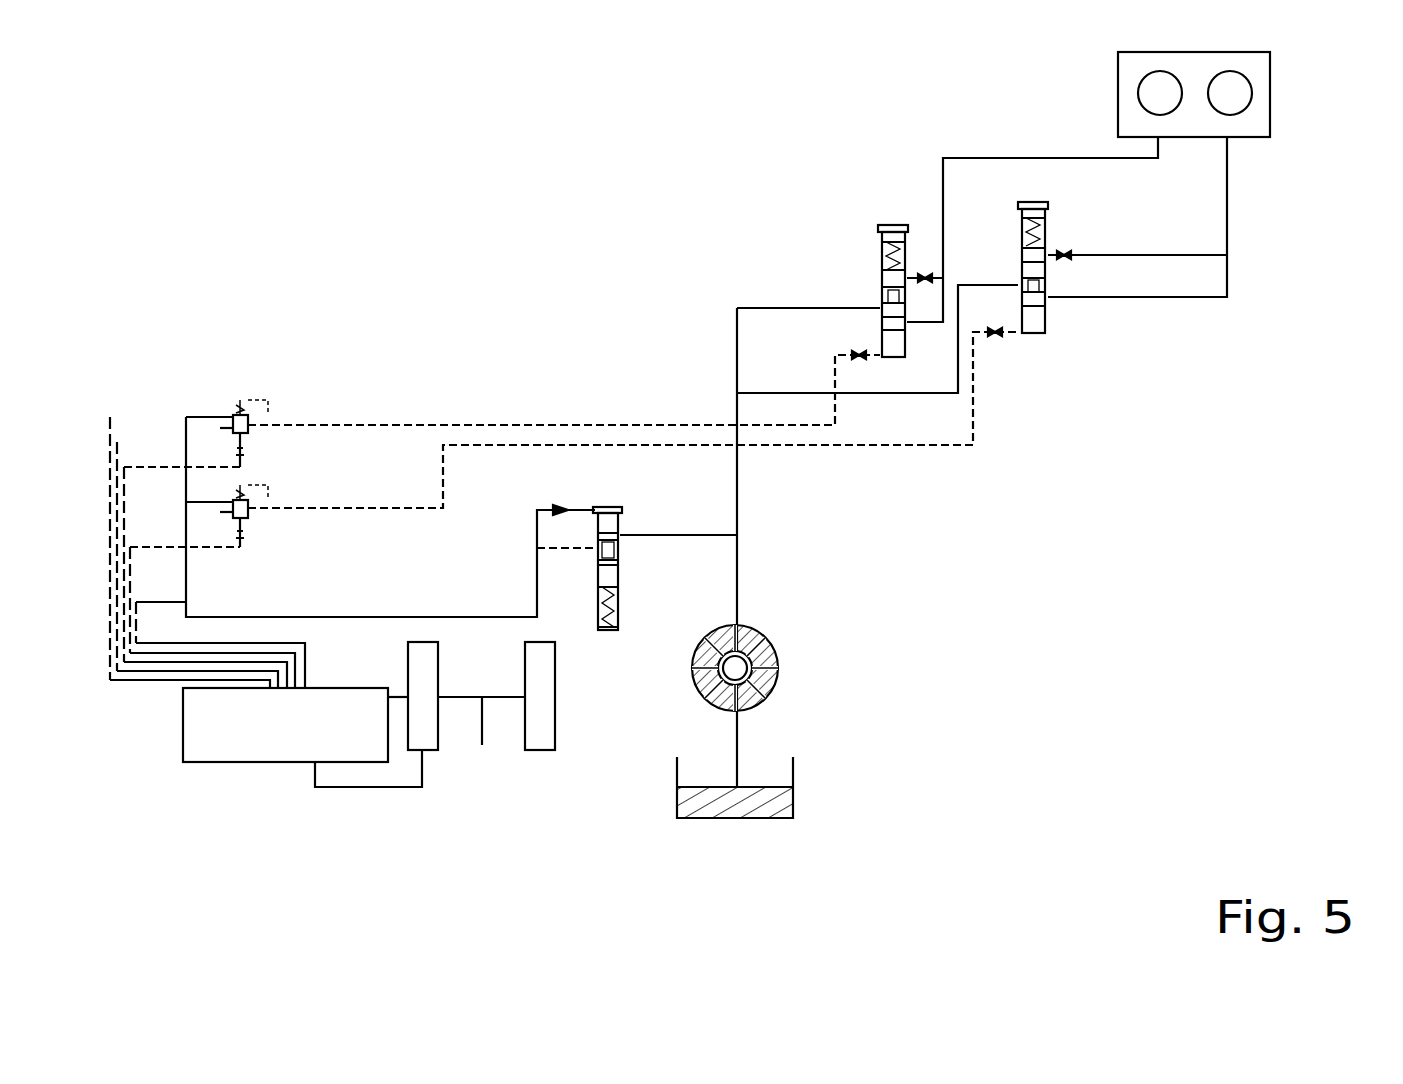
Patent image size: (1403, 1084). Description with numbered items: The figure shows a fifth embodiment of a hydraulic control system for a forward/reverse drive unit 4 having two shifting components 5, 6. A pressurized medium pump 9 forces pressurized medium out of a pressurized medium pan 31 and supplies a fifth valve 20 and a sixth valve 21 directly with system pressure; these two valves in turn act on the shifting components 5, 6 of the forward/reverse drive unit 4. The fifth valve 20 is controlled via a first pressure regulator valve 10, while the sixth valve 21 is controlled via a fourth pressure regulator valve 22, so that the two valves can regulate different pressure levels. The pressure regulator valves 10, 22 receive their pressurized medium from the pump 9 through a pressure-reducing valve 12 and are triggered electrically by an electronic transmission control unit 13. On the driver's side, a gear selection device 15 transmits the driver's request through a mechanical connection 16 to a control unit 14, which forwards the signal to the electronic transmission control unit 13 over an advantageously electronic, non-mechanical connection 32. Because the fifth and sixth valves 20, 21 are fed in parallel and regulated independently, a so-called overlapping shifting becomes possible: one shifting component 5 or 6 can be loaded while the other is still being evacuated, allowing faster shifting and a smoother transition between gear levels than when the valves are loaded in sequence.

The forward/reverse drive unit 4 is at (1260, 70).
The shifting component 5 is at (1232, 98).
The shifting component 6 is at (1160, 98).
The pressurized medium pump 9 is at (775, 690).
The first pressure regulator valve 10 is at (262, 412).
The pressure-reducing valve 12 is at (608, 632).
The electronic transmission control unit 13 is at (228, 742).
The control unit 14 is at (437, 750).
The gear selection device 15 is at (553, 715).
The mechanical connection 16 is at (482, 745).
The fifth valve 20 is at (882, 230).
The sixth valve 21 is at (1020, 215).
The fourth pressure regulator valve 22 is at (250, 505).
The pressurized medium pan 31 is at (763, 812).
The non-mechanical connection 32 is at (357, 788).